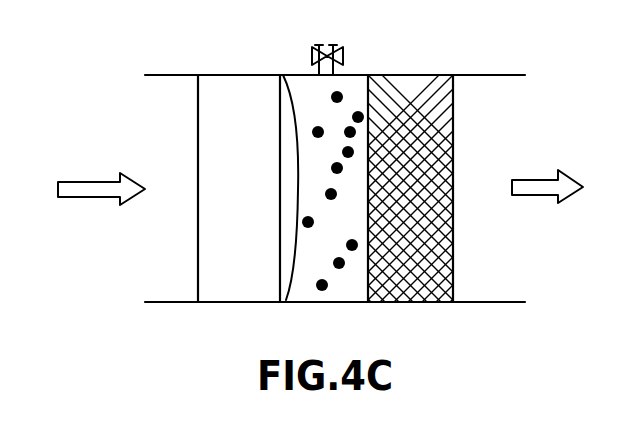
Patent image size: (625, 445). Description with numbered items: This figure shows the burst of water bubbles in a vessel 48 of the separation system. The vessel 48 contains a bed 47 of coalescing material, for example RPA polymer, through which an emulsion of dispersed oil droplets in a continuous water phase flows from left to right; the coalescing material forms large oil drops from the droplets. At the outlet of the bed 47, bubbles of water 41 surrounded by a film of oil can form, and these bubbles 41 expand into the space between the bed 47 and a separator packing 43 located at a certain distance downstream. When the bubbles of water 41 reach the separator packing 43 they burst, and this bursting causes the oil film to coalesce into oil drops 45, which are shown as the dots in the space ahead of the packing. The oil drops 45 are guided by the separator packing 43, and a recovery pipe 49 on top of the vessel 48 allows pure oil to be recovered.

The bubbles of water 41 is at (288, 267).
The separator packing 43 is at (453, 142).
The oil drops 45 is at (341, 267).
The bed of coalescing material 47 is at (197, 108).
The vessel 48 is at (177, 302).
The recovery pipe 49 is at (323, 44).